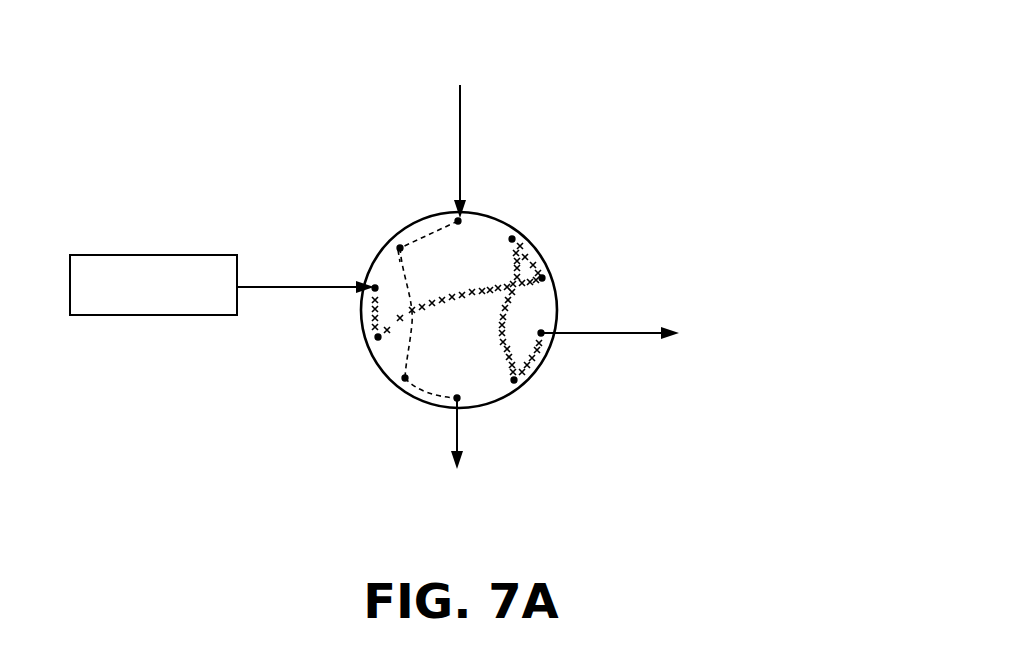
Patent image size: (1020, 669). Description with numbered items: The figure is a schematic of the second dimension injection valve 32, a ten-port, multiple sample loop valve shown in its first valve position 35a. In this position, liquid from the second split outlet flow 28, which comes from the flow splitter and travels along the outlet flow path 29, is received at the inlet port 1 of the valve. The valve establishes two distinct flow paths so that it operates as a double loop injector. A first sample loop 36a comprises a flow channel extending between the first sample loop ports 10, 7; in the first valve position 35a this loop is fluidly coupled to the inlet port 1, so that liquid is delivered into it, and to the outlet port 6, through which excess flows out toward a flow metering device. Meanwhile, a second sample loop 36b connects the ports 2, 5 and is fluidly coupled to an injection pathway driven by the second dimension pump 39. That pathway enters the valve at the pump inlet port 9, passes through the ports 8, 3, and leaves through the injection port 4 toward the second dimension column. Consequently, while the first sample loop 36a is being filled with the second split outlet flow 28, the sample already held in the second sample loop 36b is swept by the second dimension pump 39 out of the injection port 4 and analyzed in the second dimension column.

The second dimension injection valve 32 is at (406, 257).
The second dimension pump 39 is at (140, 254).
The second split outlet flow 28 is at (460, 132).
The outlet flow path 29 is at (460, 172).
The first sample loop 36a is at (399, 266).
The second sample loop 36b is at (508, 307).
The first valve position 35a is at (500, 400).
The inlet port 1 is at (457, 234).
The second sample loop port 2 is at (503, 251).
The injection pathway port 3 is at (535, 291).
The injection port 4 is at (531, 336).
The second sample loop port 5 is at (505, 371).
The outlet port 6 is at (454, 386).
The first sample loop port 7 is at (414, 368).
The injection pathway port 8 is at (389, 331).
The pump inlet port 9 is at (385, 296).
The first sample loop port 10 is at (412, 257).